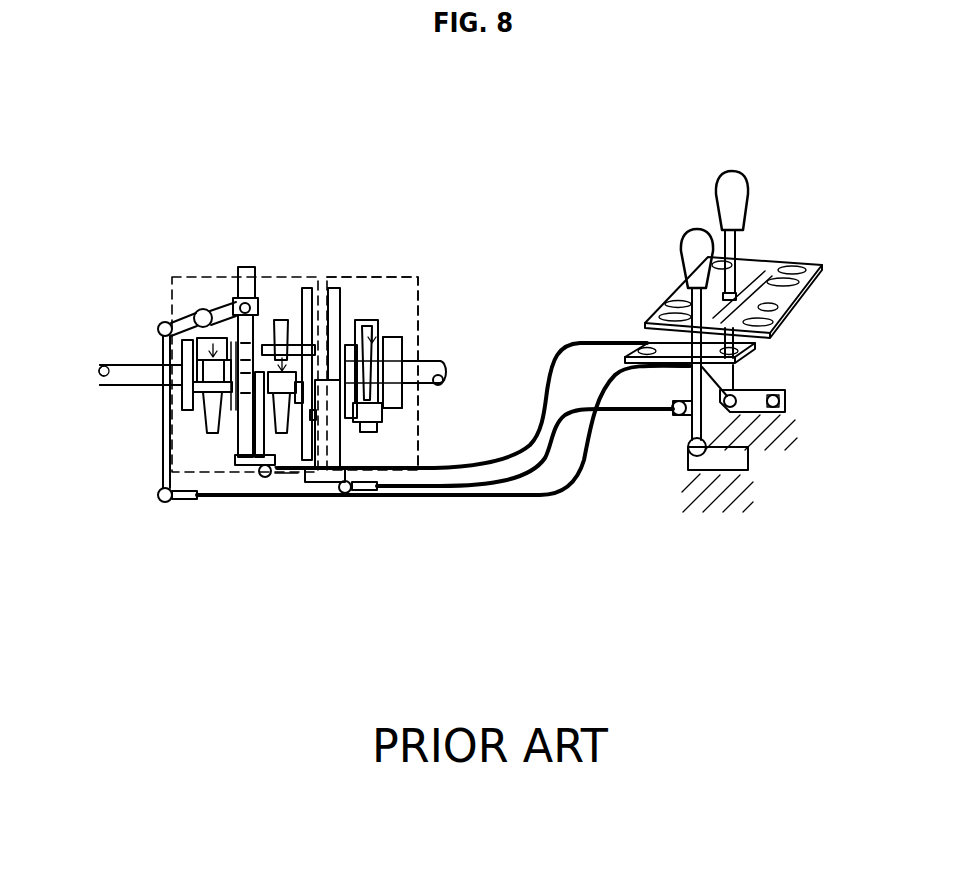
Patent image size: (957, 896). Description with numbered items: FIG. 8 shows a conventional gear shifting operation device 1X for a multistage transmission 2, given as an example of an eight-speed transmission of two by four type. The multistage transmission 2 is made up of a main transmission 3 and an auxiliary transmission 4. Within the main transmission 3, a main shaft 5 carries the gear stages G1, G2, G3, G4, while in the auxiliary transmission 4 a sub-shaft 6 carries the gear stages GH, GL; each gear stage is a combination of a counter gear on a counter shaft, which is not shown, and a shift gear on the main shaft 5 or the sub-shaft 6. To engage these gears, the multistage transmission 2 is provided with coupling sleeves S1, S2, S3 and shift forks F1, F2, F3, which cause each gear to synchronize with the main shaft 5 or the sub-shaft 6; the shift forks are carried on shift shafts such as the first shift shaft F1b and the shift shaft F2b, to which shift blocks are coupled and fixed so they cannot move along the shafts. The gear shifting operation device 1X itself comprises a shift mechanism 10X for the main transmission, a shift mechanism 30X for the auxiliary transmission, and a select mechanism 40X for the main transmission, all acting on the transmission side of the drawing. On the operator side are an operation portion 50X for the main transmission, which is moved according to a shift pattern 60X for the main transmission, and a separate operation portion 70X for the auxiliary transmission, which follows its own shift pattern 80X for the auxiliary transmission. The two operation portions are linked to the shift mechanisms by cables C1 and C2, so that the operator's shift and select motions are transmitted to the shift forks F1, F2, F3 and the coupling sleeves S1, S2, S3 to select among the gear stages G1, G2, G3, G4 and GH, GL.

The multistage transmission 2 is at (145, 255).
The main transmission 3 is at (172, 300).
The auxiliary transmission 4 is at (415, 326).
The main shaft 5 is at (145, 378).
The sub-shaft 6 is at (446, 367).
The gear stage G1 is at (185, 340).
The gear stage G2 is at (232, 267).
The gear stage G3 is at (276, 320).
The gear stage G4 is at (333, 290).
The gear stage GH is at (366, 320).
The gear stage GL is at (398, 340).
The coupling sleeve S1 is at (212, 350).
The coupling sleeve S2 is at (282, 362).
The coupling sleeve S3 is at (374, 334).
The shift fork F1 is at (224, 302).
The shift fork F2 is at (305, 290).
The shift fork F3 is at (388, 337).
The first shift shaft F1b is at (305, 352).
The shift shaft F2b is at (237, 468).
The shift mechanism for main transmission 10X is at (257, 440).
The shift mechanism for auxiliary transmission 30X is at (330, 430).
The select mechanism for main transmission 40X is at (158, 330).
The gear shifting operation device 1X is at (580, 280).
The operation portion for main transmission 50X is at (789, 216).
The shift pattern for main transmission 60X is at (762, 260).
The operation portion for auxiliary transmission 70X is at (696, 222).
The shift pattern for auxiliary transmission 80X is at (668, 345).
The first control cable C1 is at (552, 348).
The second control cable C2 is at (582, 487).